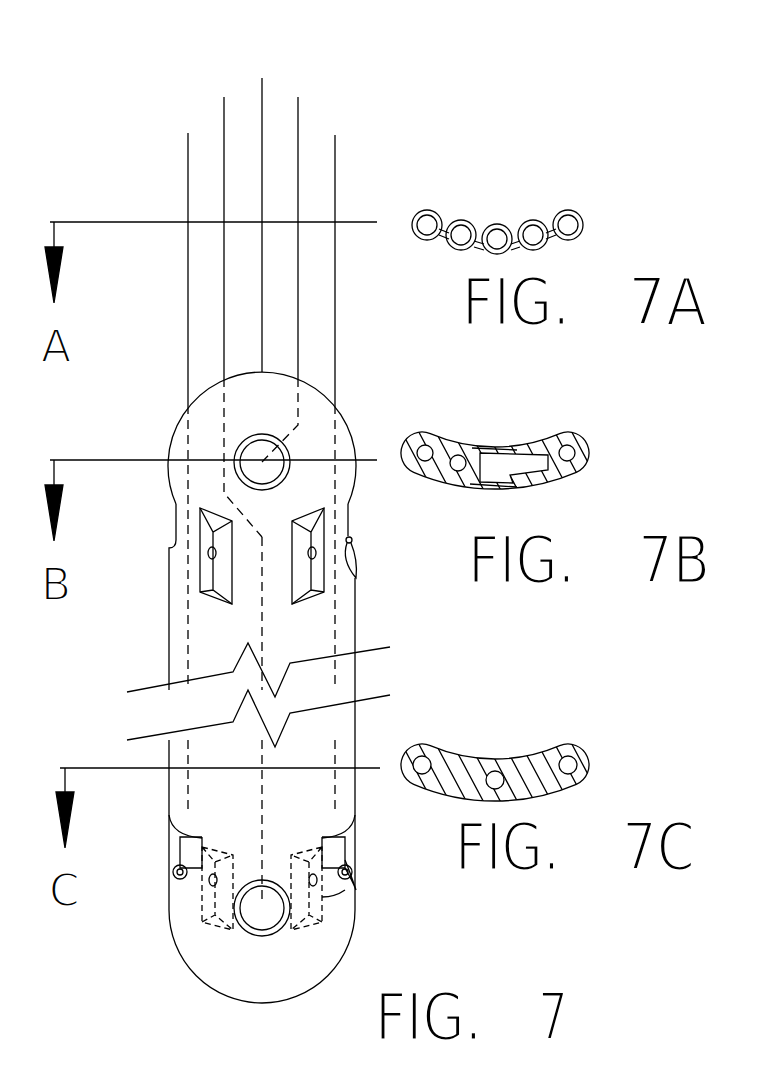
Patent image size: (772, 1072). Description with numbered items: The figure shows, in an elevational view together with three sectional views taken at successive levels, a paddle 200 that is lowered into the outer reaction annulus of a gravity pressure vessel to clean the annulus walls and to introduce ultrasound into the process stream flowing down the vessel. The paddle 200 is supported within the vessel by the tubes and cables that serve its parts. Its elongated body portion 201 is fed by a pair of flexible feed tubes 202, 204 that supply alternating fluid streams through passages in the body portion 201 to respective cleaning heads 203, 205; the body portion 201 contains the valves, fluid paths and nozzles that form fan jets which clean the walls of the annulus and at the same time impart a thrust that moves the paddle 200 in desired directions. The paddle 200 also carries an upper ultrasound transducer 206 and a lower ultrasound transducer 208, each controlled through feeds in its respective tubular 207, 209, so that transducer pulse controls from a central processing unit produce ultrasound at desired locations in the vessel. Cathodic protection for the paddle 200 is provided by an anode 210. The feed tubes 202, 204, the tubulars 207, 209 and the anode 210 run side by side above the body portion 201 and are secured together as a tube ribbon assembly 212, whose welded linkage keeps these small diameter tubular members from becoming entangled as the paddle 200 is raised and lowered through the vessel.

In FIG. 7, the paddle 200 is at (440, 636).
In FIG. 7, the body portion 201 is at (172, 598).
In FIG. 7, the feed tube 202 is at (335, 148).
In FIG. 7A, the feed tube 202 is at (583, 218).
In FIG. 7B, the feed tube 202 is at (587, 448).
In FIG. 7C, the feed tube 202 is at (570, 767).
In FIG. 7, the cleaning head 203 is at (312, 556).
In FIG. 7, the feed tube 204 is at (188, 187).
In FIG. 7A, the feed tube 204 is at (413, 221).
In FIG. 7B, the feed tube 204 is at (426, 450).
In FIG. 7C, the feed tube 204 is at (423, 762).
In FIG. 7, the cleaning head 205 is at (210, 556).
In FIG. 7, the upper ultrasound transducer 206 is at (290, 455).
In FIG. 7B, the upper ultrasound transducer 206 is at (497, 448).
In FIG. 7, the tubular 207 is at (299, 120).
In FIG. 7A, the tubular 207 is at (533, 222).
In FIG. 7, the lower ultrasound transducer 208 is at (255, 937).
In FIG. 7, the tubular 209 is at (224, 130).
In FIG. 7A, the tubular 209 is at (455, 222).
In FIG. 7B, the tubular 209 is at (481, 450).
In FIG. 7C, the tubular 209 is at (497, 777).
In FIG. 7, the anode 210 is at (262, 100).
In FIG. 7A, the anode 210 is at (494, 225).
In FIG. 7A, the tube ribbon assembly 212 is at (618, 122).